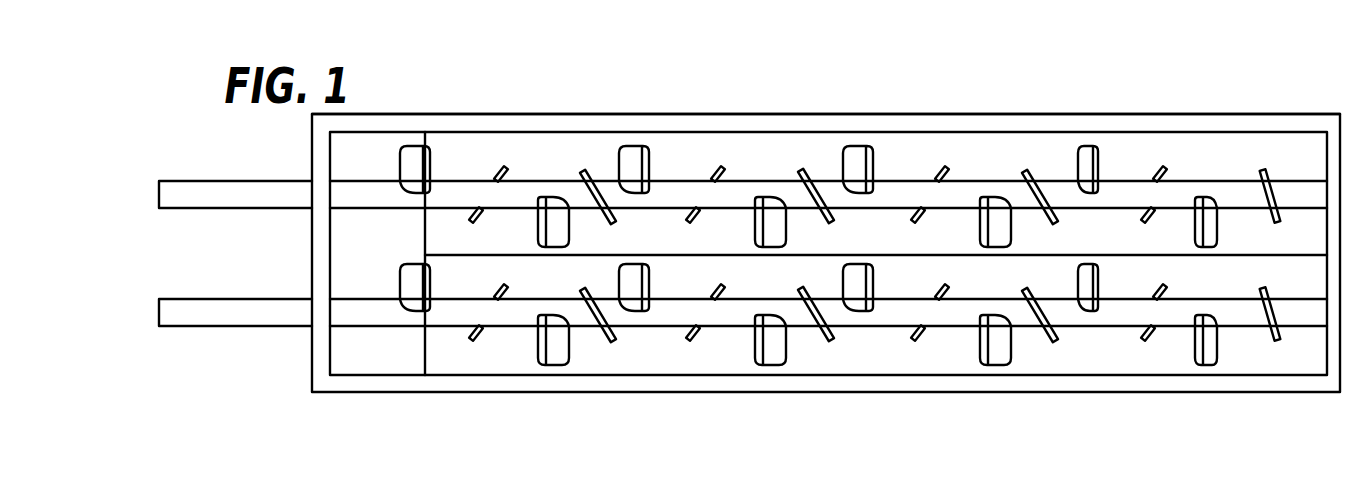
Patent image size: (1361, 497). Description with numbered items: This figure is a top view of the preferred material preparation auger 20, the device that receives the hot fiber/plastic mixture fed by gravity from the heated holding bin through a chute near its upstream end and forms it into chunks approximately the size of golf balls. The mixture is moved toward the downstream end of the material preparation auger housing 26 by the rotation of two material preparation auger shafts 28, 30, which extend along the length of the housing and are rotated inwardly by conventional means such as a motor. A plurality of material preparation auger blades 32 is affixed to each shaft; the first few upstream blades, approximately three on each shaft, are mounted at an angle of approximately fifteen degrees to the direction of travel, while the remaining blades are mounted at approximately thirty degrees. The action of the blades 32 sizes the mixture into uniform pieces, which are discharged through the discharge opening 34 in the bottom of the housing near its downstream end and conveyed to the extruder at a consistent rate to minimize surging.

The material preparation auger 20 is at (821, 102).
The material preparation auger housing 26 is at (593, 115).
The material preparation auger shaft 28 is at (232, 181).
The material preparation auger shaft 30 is at (209, 326).
The material preparation auger blade 32 is at (646, 150).
The discharge opening 34 is at (355, 240).